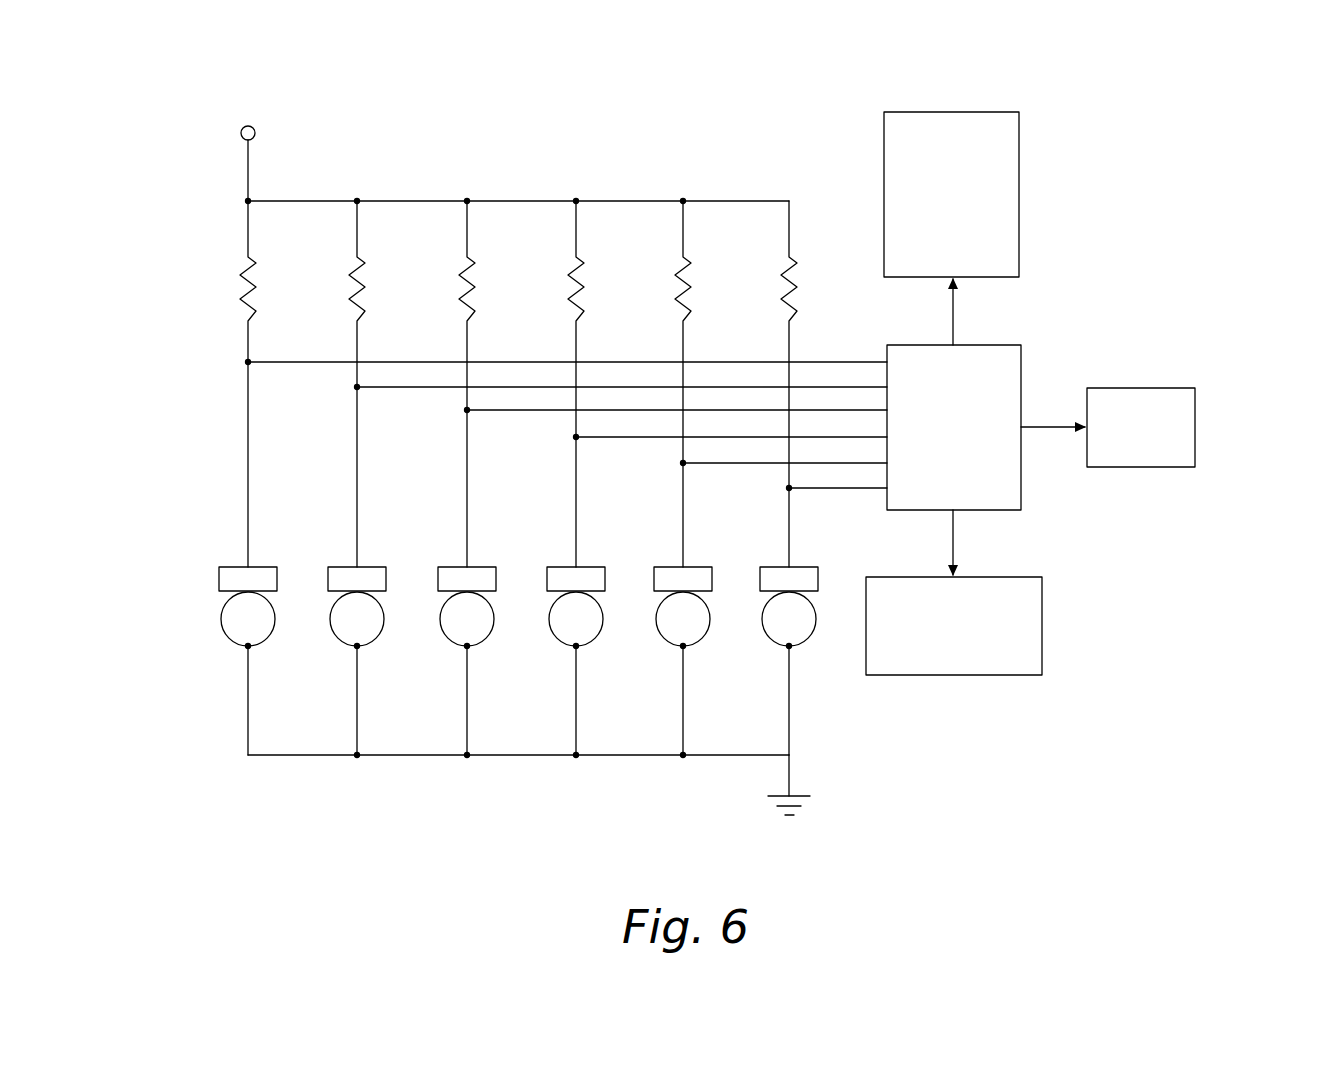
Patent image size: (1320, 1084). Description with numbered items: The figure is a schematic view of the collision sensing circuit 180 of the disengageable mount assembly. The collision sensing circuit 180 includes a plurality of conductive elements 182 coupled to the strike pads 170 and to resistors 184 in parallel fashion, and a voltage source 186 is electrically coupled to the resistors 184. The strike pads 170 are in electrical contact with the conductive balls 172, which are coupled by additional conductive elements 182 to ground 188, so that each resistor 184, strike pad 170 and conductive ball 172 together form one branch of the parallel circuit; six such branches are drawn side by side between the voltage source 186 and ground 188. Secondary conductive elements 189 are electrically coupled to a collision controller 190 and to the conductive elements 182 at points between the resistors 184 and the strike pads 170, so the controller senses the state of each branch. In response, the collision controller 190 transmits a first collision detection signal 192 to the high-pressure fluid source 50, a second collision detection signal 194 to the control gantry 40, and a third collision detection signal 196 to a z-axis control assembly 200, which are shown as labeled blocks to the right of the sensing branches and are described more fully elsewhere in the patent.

The voltage source 186 is at (312, 104).
The collision sensing circuit 180 is at (785, 178).
The resistors 184 is at (258, 306).
The secondary conductive elements 189 is at (543, 411).
The conductive elements 182 is at (356, 484).
The strike pads 170 is at (219, 580).
The conductive balls 172 is at (221, 618).
The ground 188 is at (748, 804).
The z-axis control assembly 200 is at (1019, 195).
The third collision detection signal 196 is at (955, 322).
The collision controller 190 is at (1021, 372).
The second collision detection signal 194 is at (1037, 428).
The control gantry 40 is at (1195, 437).
The first collision detection signal 192 is at (955, 532).
The high-pressure fluid source 50 is at (1042, 625).